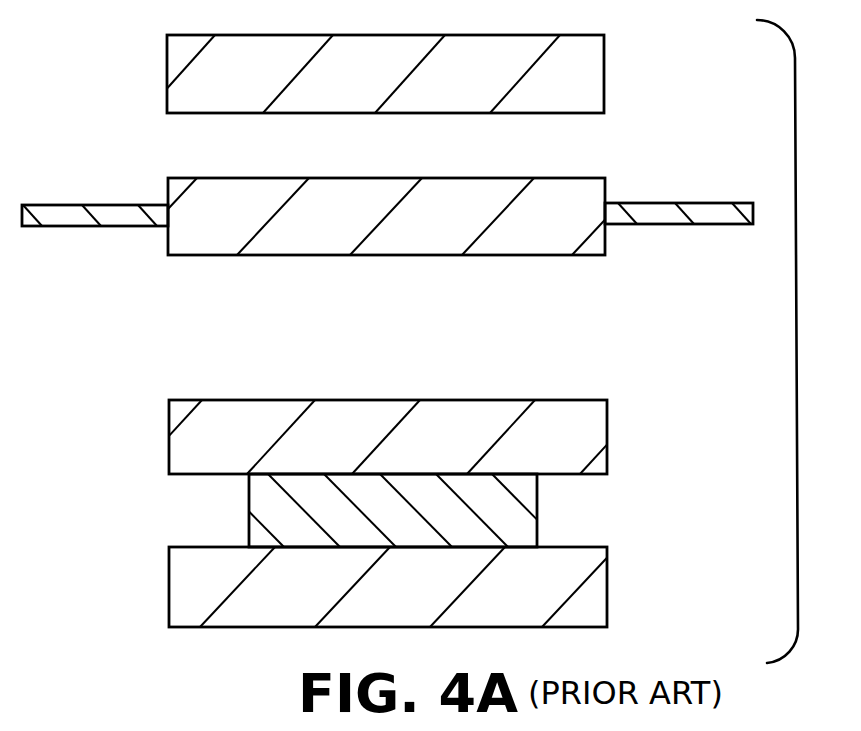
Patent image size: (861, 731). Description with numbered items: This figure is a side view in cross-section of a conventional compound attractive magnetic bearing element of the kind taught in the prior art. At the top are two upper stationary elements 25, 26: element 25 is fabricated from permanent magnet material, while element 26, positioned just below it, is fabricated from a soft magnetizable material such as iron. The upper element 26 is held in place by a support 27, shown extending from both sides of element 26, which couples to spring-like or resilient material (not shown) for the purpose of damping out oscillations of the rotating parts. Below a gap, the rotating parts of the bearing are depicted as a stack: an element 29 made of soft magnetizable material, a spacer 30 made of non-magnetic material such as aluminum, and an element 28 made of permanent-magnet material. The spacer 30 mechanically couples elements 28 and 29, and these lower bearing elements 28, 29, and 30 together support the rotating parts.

The upper stationary element 25 is at (605, 76).
The upper stationary element 26 is at (580, 177).
The support 27 is at (65, 206).
The rotating element 28 is at (607, 595).
The rotating element 29 is at (607, 412).
The spacer 30 is at (537, 508).